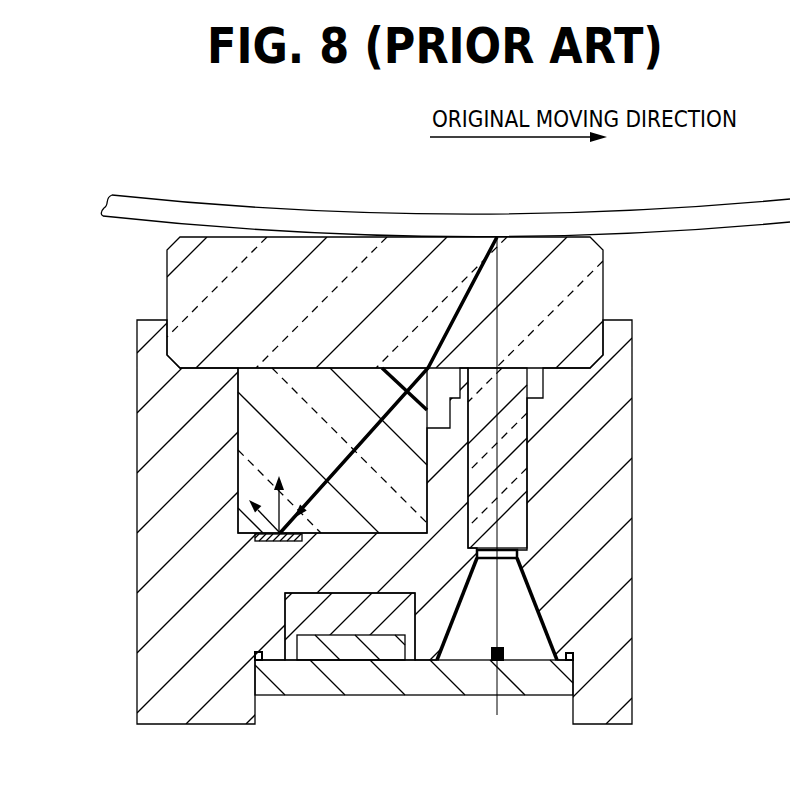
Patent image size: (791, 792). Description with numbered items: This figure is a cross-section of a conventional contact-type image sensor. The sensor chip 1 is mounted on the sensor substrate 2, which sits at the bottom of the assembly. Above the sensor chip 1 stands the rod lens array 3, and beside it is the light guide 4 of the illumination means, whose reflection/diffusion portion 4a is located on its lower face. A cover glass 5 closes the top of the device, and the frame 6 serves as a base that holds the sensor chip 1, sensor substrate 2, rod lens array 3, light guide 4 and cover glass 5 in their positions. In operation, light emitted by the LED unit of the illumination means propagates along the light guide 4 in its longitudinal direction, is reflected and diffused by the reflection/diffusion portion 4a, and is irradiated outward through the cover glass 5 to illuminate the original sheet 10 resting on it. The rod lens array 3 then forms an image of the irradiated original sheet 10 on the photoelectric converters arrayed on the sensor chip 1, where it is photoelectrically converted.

The original sheet 10 is at (612, 222).
The cover glass 5 is at (570, 273).
The frame 6 is at (600, 395).
The light guide 4 is at (252, 416).
The reflection/diffusion portion 4a is at (260, 538).
The rod lens array 3 is at (508, 470).
The sensor chip 1 is at (503, 648).
The sensor substrate 2 is at (413, 683).